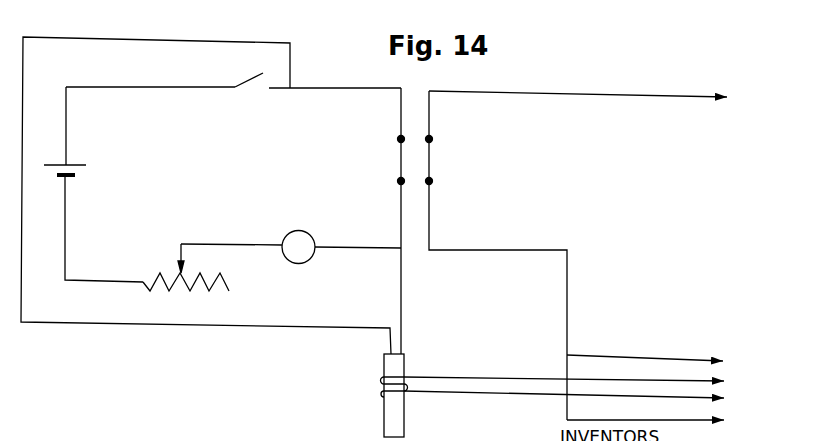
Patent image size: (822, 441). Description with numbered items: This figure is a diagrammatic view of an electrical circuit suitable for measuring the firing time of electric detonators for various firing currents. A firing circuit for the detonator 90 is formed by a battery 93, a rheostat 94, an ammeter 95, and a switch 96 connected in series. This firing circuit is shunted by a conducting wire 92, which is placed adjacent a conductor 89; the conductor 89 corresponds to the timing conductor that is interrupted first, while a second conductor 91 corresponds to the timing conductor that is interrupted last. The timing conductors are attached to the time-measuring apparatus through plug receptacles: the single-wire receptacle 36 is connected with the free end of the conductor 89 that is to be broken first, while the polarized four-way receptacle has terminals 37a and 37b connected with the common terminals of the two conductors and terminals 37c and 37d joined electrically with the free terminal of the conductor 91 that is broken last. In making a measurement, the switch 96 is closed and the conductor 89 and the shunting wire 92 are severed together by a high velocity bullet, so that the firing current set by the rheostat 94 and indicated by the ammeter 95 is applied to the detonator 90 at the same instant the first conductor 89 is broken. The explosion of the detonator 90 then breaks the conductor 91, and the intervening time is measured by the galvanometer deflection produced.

The plug receptacle 36 is at (590, 99).
The receptacle terminal 37a is at (580, 398).
The receptacle terminal 37b is at (662, 420).
The receptacle terminal 37c is at (662, 360).
The receptacle terminal 37d is at (581, 380).
The conductor 89 is at (431, 177).
The detonator 90 is at (386, 410).
The conductor 91 is at (460, 377).
The conducting wire 92 is at (400, 161).
The battery 93 is at (78, 171).
The rheostat 94 is at (165, 273).
The ammeter 95 is at (300, 247).
The switch 96 is at (233, 92).